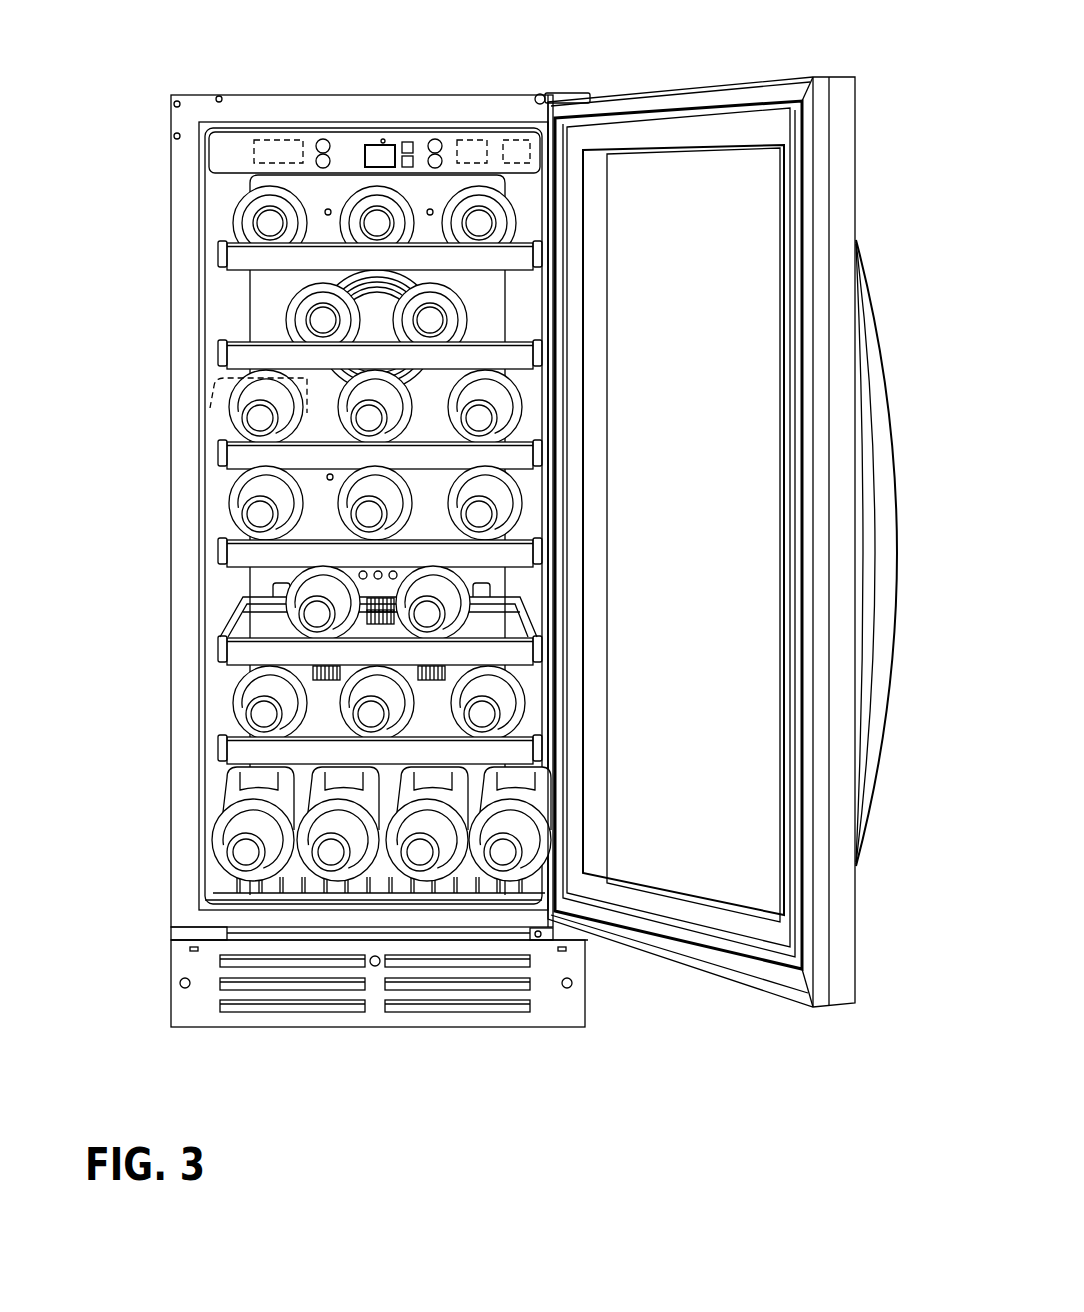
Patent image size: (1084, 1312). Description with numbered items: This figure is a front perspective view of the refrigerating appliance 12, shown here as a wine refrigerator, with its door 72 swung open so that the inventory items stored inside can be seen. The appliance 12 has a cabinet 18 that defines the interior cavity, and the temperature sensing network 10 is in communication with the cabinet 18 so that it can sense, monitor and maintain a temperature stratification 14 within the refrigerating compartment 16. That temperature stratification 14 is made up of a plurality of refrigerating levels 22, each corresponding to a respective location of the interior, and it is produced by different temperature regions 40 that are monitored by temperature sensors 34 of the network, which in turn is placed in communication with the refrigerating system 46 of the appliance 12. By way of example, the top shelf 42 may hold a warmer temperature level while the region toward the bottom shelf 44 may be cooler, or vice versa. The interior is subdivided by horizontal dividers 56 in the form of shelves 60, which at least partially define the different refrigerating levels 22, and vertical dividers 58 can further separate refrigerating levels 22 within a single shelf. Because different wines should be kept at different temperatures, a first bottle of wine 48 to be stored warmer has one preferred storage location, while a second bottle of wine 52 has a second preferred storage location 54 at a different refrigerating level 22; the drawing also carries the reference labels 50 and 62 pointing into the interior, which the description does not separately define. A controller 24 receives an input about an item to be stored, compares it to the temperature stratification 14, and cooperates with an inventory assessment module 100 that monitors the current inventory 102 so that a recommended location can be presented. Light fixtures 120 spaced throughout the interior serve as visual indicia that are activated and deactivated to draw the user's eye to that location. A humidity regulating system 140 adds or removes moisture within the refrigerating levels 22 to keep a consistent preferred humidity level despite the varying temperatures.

The temperature sensing network 10 is at (229, 204).
The appliance 12 is at (404, 77).
The temperature stratification 14 is at (102, 920).
The refrigerating compartment 16 is at (536, 503).
The cabinet 18 is at (398, 925).
The refrigerating levels 22 is at (539, 280).
The controller 24 is at (284, 137).
The temperature sensors 34 is at (329, 479).
The temperature regions 40 is at (528, 588).
The top shelf 42 is at (527, 260).
The bottom shelf 44 is at (475, 900).
The refrigerating system 46 is at (333, 1033).
The first bottle of wine 48 is at (452, 307).
The bottle 50 is at (477, 312).
The second bottle of wine 52 is at (514, 692).
The second preferred storage location 54 is at (543, 708).
The horizontal dividers 56 is at (516, 654).
The vertical dividers 58 is at (222, 403).
The shelves 60 is at (518, 456).
The shelf 62 is at (512, 357).
The door 72 is at (682, 957).
The inventory assessment module 100 is at (469, 133).
The current inventory 102 is at (541, 406).
The light fixtures 120 is at (260, 273).
The humidity regulating system 140 is at (513, 132).